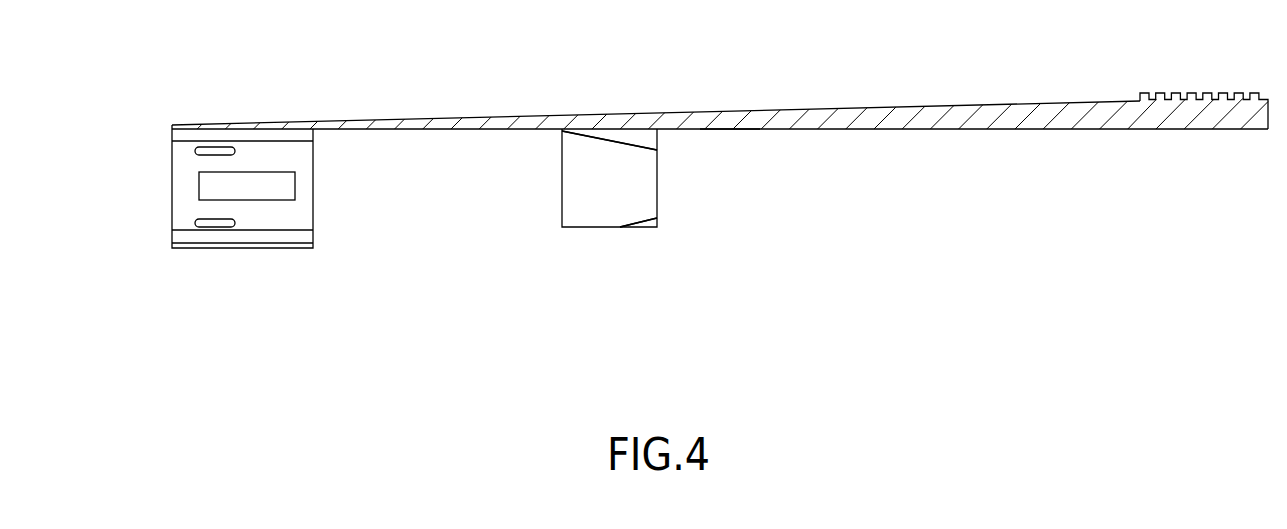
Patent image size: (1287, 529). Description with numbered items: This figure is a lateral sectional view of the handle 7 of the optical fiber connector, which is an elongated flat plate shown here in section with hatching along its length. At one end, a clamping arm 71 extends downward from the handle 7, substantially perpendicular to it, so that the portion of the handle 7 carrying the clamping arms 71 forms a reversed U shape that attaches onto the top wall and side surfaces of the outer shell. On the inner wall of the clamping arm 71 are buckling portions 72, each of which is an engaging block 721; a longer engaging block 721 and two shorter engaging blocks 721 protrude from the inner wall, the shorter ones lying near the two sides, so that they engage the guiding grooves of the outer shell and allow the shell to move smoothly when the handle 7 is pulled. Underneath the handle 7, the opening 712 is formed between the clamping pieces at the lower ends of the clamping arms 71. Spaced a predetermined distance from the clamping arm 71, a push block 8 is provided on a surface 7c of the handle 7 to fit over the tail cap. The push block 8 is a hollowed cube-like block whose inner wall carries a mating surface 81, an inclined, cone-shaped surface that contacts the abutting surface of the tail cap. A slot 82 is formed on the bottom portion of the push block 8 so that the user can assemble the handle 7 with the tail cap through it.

The handle 7 is at (925, 117).
The surface of the handle 7c is at (720, 130).
The clamping arm 71 is at (172, 185).
The opening 712 is at (246, 248).
The buckling portion 72 is at (303, 187).
The engaging block 721 is at (233, 149).
The push block 8 is at (562, 170).
The mating surface 81 is at (588, 193).
The slot 82 is at (590, 227).